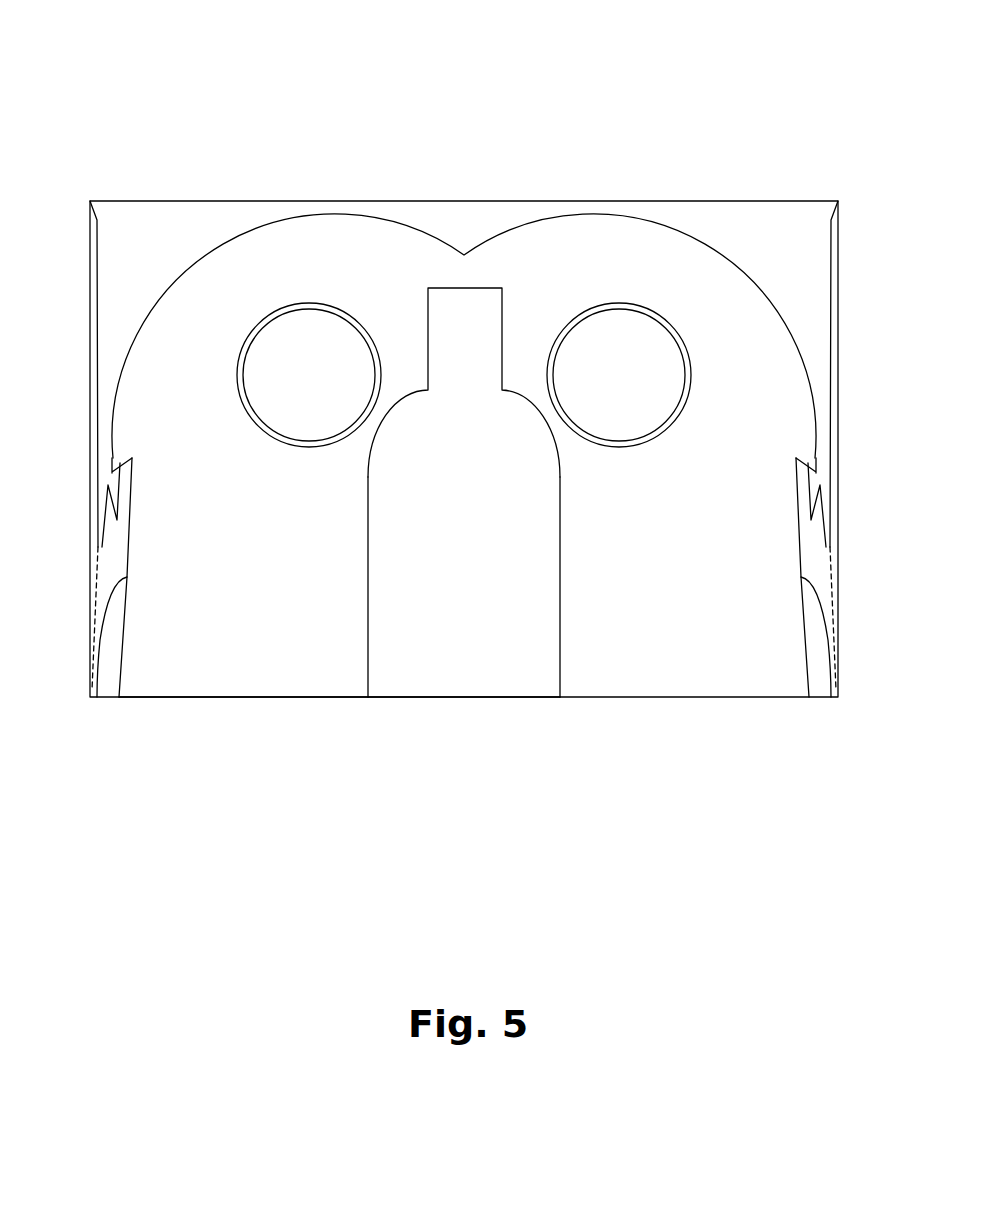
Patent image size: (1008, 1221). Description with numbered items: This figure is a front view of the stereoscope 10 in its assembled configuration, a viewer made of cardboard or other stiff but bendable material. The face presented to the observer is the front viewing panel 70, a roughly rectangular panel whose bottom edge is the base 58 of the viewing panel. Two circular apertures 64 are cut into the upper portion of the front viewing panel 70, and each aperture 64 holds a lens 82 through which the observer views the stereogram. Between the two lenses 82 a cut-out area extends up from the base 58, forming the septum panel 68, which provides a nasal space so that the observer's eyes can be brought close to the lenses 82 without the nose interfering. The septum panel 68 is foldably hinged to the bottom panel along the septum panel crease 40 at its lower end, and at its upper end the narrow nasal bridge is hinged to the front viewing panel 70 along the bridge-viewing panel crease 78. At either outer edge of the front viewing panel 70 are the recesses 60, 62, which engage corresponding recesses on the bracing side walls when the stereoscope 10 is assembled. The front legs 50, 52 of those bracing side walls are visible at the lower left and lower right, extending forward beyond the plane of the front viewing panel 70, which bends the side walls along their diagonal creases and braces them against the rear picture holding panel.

The stereoscope 10 is at (770, 92).
The septum panel crease 40 is at (463, 698).
The front leg of bracing side wall 50 is at (97, 697).
The front leg of bracing side wall 52 is at (831, 697).
The base of the viewing panel 58 is at (243, 697).
The recess on the viewing panel 60 is at (116, 458).
The recess on the viewing panel 62 is at (812, 458).
The aperture 64 is at (310, 347).
The septum panel 68 is at (498, 568).
The front viewing panel 70 is at (719, 280).
The bridge-viewing panel crease 78 is at (463, 288).
The lens 82 is at (262, 317).